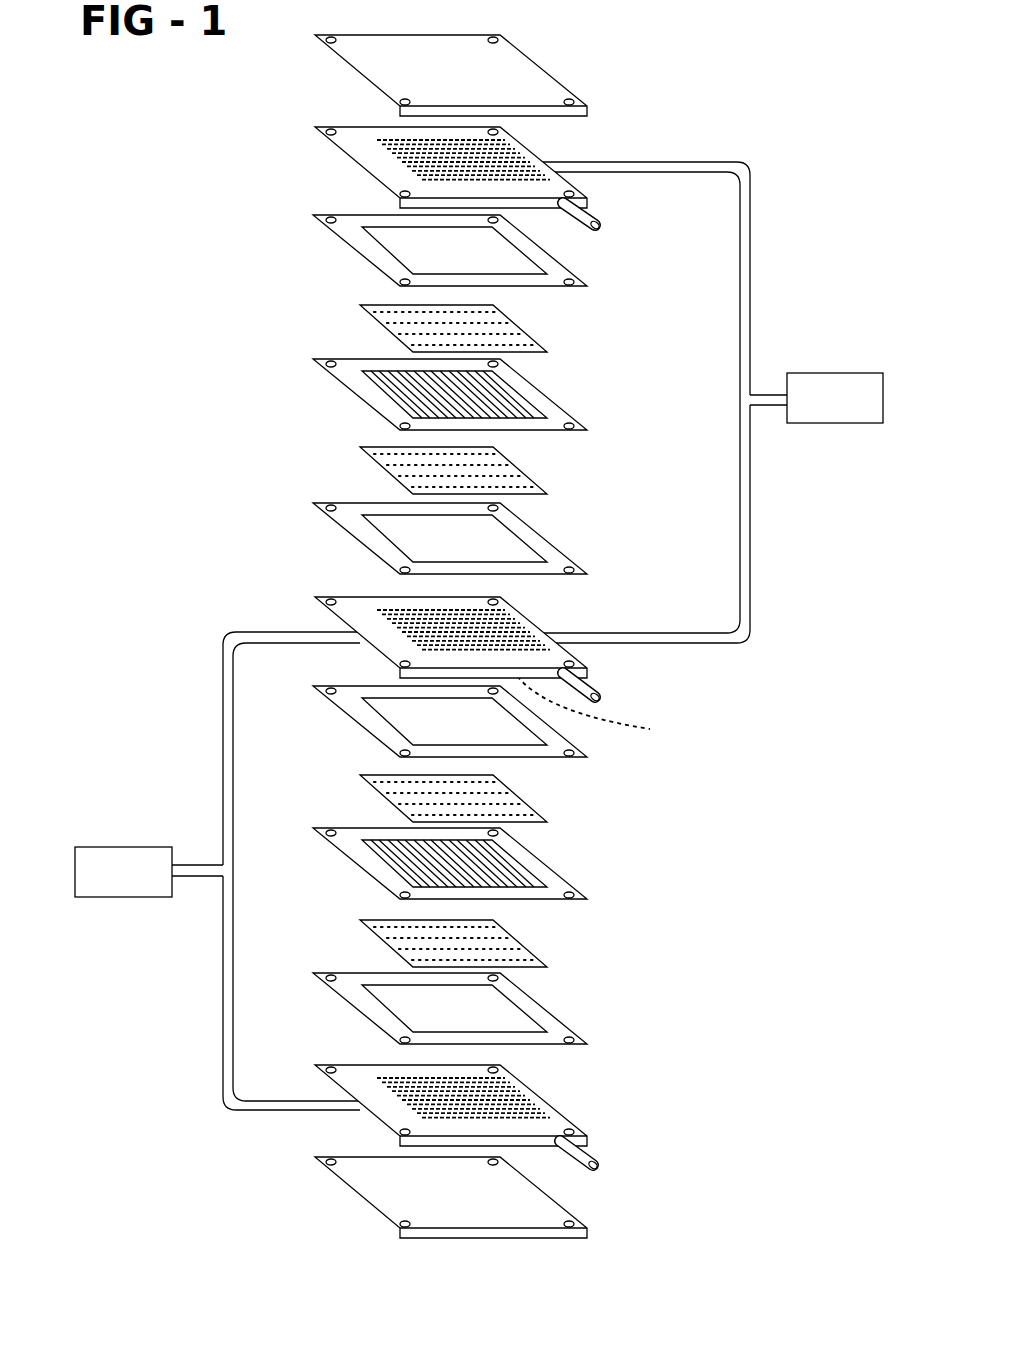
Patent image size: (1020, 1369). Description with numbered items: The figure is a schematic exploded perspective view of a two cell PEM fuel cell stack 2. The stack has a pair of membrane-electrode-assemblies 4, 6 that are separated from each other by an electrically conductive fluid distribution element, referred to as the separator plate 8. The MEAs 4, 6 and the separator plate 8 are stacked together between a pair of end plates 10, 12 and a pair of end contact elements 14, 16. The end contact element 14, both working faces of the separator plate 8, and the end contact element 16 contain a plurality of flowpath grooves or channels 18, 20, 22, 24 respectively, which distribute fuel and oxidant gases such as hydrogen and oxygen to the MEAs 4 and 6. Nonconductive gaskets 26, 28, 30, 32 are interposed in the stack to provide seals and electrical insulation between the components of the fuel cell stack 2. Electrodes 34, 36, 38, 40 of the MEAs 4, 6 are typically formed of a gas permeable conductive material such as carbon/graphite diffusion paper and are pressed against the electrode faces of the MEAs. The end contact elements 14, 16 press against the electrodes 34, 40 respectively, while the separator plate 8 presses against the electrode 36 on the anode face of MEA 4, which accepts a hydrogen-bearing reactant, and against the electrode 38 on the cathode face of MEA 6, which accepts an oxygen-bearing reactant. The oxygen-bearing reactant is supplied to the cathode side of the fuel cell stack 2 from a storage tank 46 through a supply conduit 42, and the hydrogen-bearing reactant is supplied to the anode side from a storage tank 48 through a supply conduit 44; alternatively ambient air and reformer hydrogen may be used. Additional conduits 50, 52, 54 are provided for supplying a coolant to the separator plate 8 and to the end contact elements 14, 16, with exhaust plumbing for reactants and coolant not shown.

The PEM fuel cell stack 2 is at (783, 152).
The membrane-electrode-assembly 4 is at (348, 393).
The membrane-electrode-assembly 6 is at (557, 867).
The separator plate 8 is at (466, 632).
The end plate 10 is at (337, 68).
The end plate 12 is at (555, 1170).
The end contact element 14 is at (455, 174).
The end contact element 16 is at (504, 1101).
The flowpath channels 18 is at (505, 158).
The flowpath channels 20 is at (388, 608).
The flowpath channels 22 is at (594, 698).
The flowpath channels 24 is at (503, 1083).
The nonconductive gasket 26 is at (353, 249).
The nonconductive gasket 28 is at (355, 543).
The nonconductive gasket 30 is at (577, 748).
The nonconductive gasket 32 is at (557, 1008).
The electrode 34 is at (377, 322).
The electrode 36 is at (377, 469).
The electrode 38 is at (510, 793).
The electrode 40 is at (520, 933).
The supply conduit 42 is at (743, 575).
The supply conduit 44 is at (227, 699).
The storage tank 46 is at (845, 373).
The storage tank 48 is at (122, 847).
The coolant conduit 50 is at (593, 213).
The coolant conduit 52 is at (598, 697).
The coolant conduit 54 is at (583, 1130).